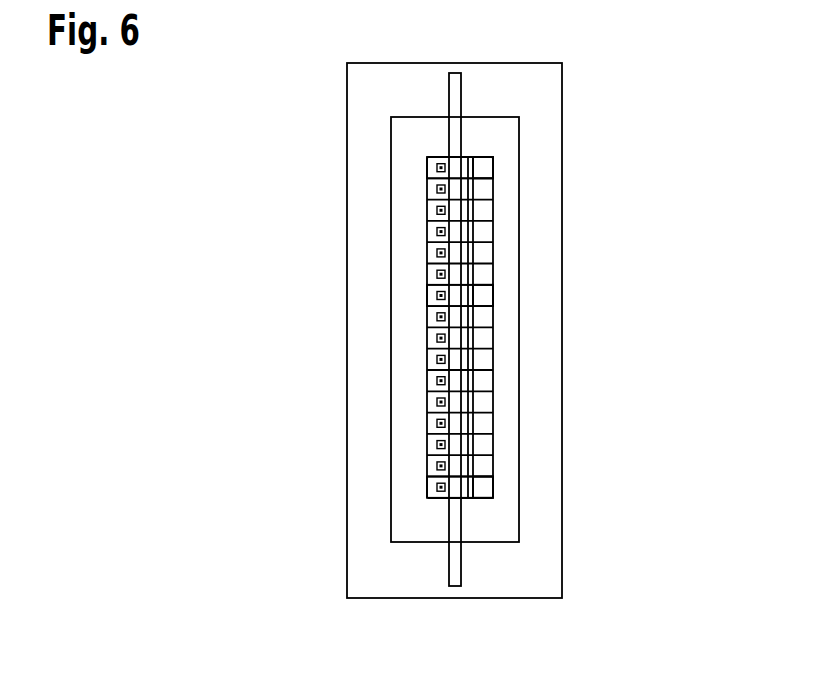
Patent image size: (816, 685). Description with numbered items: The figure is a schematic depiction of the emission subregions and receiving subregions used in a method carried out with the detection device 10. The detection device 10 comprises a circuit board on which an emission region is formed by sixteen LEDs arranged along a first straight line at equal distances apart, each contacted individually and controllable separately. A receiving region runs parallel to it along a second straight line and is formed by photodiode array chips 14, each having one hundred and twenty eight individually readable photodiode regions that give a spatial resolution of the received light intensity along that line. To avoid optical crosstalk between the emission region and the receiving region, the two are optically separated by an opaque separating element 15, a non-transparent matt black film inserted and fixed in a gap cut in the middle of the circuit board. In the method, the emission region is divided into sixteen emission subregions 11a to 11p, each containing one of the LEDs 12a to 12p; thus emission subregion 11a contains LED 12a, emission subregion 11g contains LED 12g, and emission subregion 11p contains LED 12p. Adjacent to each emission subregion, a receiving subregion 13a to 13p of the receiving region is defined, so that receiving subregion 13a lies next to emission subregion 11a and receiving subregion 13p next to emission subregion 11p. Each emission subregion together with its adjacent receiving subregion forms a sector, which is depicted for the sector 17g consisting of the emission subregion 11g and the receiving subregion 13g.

The detection device 10 is at (351, 97).
The emission subregion 11a is at (435, 166).
The LED 12a is at (428, 172).
The receiving subregion 13a is at (483, 168).
The emission subregion 11g is at (437, 294).
The LED 12g is at (428, 297).
The receiving subregion 13g is at (483, 299).
The sector 17g is at (510, 291).
The emission subregion 11p is at (430, 478).
The LED 12p is at (437, 489).
The receiving subregion 13p is at (483, 487).
The photodiode array chip 14 is at (478, 230).
The separating element 15 is at (456, 527).